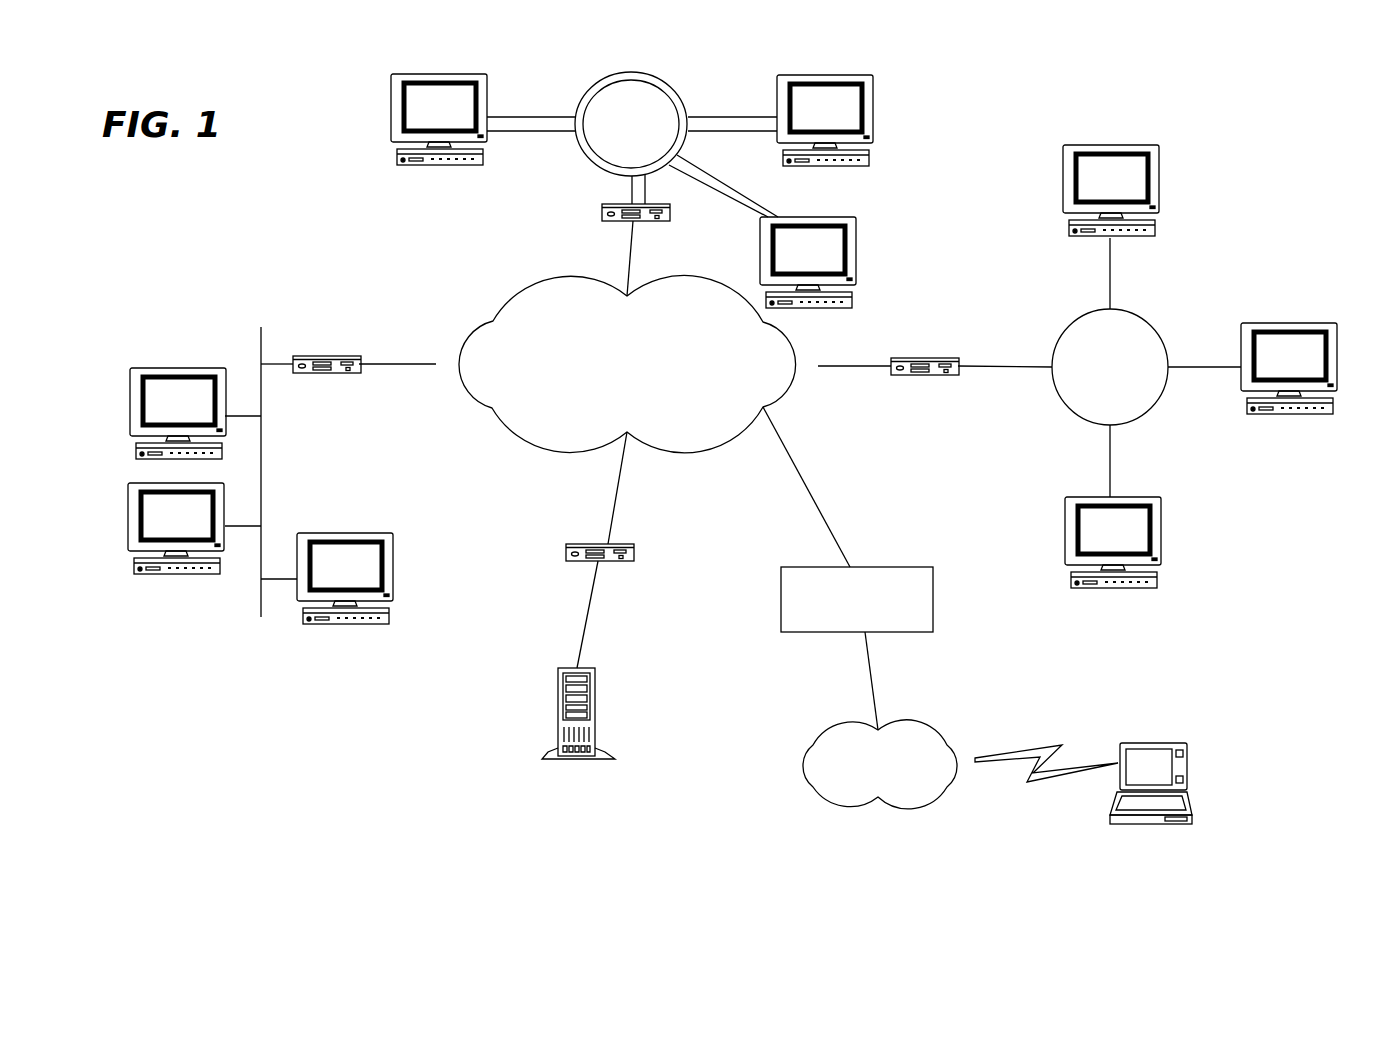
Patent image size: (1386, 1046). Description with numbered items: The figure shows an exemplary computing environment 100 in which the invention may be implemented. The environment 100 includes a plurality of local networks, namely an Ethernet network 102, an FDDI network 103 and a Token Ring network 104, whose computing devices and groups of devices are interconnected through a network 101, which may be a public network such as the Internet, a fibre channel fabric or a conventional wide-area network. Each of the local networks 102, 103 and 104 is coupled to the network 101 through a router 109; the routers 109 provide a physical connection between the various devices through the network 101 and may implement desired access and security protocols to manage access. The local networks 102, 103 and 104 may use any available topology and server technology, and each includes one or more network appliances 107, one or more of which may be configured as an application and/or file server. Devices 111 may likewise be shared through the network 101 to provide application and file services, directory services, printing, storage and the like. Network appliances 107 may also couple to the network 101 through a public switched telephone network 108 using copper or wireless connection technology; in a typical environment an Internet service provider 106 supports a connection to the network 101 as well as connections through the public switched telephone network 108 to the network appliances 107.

The computing environment 100 is at (1248, 116).
The network 101 is at (485, 304).
The Ethernet network 102 is at (185, 300).
The FDDI network 103 is at (478, 214).
The Token Ring network 104 is at (1232, 515).
The Internet service provider 106 is at (865, 572).
The network appliance 107 is at (388, 101).
The public switched telephone network 108 is at (832, 720).
The router 109 is at (600, 215).
The shared device 111 is at (597, 712).